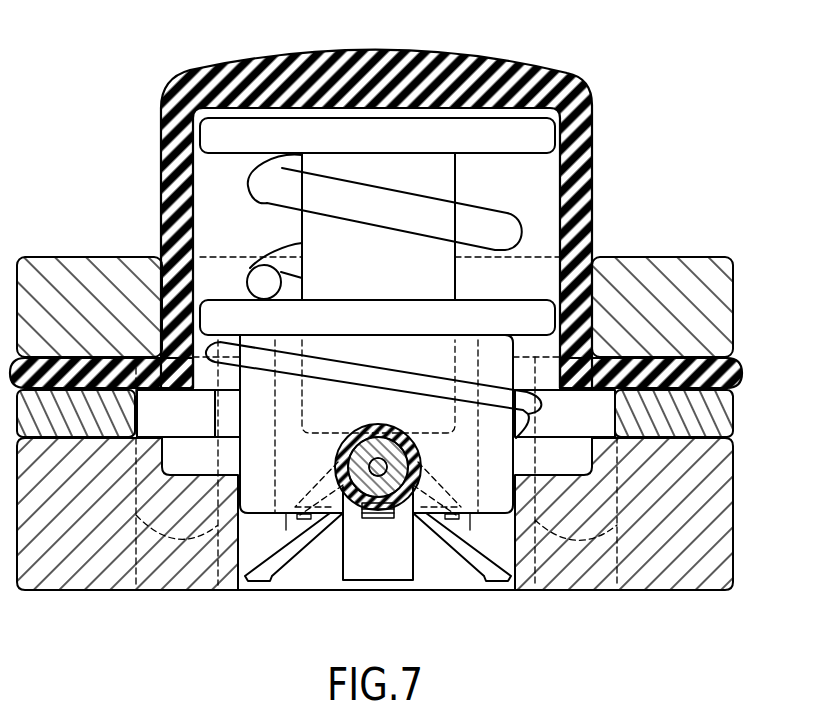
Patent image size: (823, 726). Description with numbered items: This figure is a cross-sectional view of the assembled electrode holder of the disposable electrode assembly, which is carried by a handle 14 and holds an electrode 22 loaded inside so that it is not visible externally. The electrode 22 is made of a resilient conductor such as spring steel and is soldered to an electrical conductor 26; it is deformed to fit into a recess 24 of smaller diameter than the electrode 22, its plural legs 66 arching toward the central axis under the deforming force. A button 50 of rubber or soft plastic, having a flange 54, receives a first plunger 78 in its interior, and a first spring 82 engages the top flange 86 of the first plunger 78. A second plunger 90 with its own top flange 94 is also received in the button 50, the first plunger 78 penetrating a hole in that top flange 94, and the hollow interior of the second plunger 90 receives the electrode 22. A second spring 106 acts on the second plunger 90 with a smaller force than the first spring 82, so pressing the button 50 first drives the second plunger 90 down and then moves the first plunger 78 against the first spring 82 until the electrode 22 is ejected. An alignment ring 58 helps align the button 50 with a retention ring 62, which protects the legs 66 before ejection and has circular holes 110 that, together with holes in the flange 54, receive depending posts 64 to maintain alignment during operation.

The handle 14 is at (707, 417).
The electrode 22 is at (396, 558).
The recess 24 is at (317, 560).
The electrical conductor 26 is at (352, 430).
The button 50 is at (593, 142).
The flange 54 is at (741, 374).
The alignment ring 58 is at (713, 293).
The retention ring 62 is at (688, 492).
The depending posts 64 is at (192, 428).
The legs 66 is at (262, 570).
The first plunger 78 is at (394, 270).
The first spring 82 is at (502, 224).
The top flange 86 is at (498, 143).
The second plunger 90 is at (457, 481).
The top flange 94 is at (495, 312).
The second spring 106 is at (467, 391).
The circular holes 110 is at (139, 566).